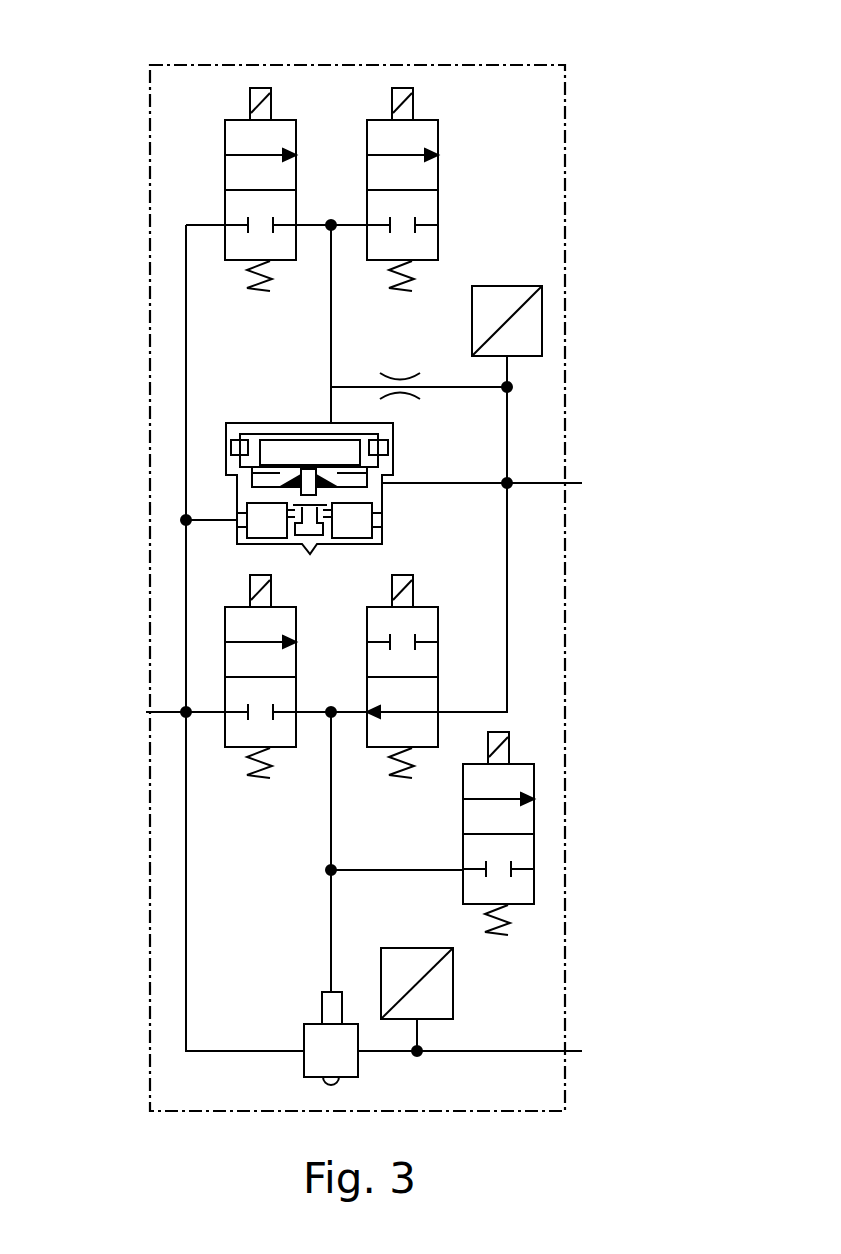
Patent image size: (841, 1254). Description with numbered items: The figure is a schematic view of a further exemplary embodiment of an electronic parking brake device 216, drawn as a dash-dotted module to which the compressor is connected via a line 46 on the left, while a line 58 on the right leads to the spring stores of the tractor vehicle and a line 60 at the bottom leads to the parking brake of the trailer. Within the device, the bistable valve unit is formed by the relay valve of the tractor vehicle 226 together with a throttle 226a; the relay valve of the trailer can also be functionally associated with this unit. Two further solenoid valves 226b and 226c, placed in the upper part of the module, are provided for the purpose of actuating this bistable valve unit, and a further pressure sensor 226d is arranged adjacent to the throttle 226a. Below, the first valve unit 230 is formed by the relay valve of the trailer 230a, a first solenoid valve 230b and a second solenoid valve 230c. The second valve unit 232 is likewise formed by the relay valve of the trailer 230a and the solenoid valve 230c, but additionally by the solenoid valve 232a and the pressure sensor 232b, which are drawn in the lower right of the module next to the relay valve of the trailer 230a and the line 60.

The electronic parking brake device 216 is at (640, 176).
The relay valve of the tractor vehicle 226 is at (377, 500).
The throttle 226a is at (400, 371).
The solenoid valve 226b is at (238, 249).
The solenoid valve 226c is at (427, 206).
The pressure sensor 226d is at (533, 307).
The first valve unit 230 is at (635, 566).
The relay valve of the trailer 230a is at (315, 1035).
The first solenoid valve 230b is at (240, 735).
The second solenoid valve 230c is at (380, 735).
The second valve unit 232 is at (635, 804).
The solenoid valve 232a is at (480, 890).
The pressure sensor 232b is at (450, 990).
The line 46 is at (170, 713).
The line 58 is at (573, 483).
The line 60 is at (580, 1051).